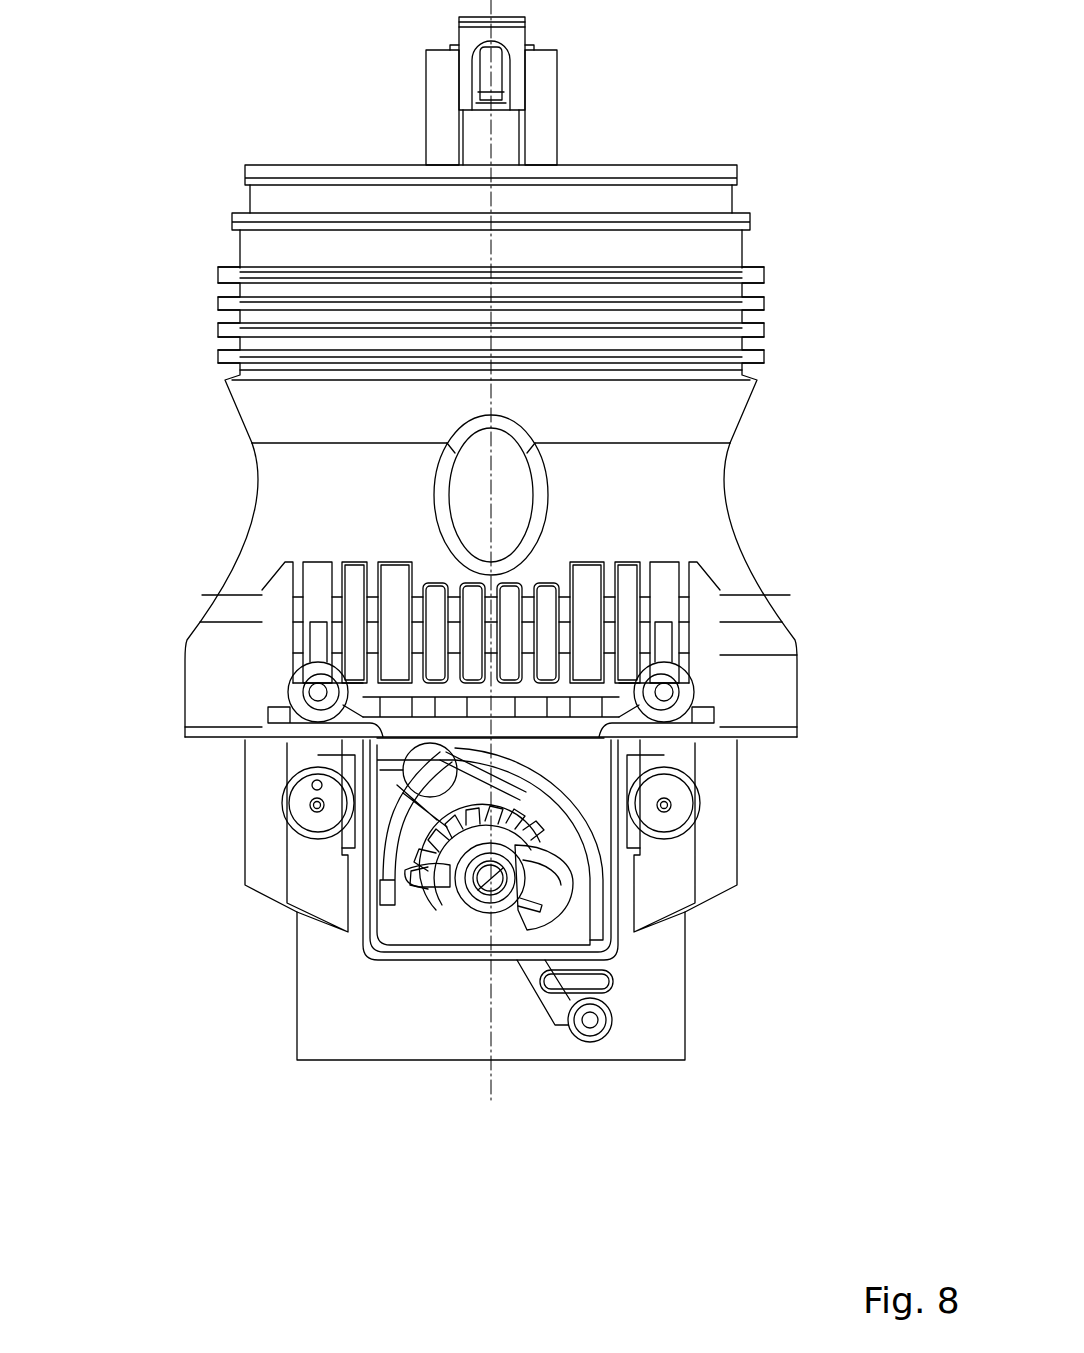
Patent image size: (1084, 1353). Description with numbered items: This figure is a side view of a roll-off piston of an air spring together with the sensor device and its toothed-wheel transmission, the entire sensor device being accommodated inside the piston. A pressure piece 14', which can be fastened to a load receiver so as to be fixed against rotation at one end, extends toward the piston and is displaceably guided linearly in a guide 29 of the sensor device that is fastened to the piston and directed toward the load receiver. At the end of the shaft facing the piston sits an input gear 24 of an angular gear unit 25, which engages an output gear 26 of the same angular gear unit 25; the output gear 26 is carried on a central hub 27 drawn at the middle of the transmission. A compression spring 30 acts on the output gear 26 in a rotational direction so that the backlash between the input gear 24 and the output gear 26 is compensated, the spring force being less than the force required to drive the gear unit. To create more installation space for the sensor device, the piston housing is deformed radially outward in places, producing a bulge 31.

The guide 29 is at (540, 75).
The pressure piece 14' is at (708, 91).
The bulge 31 is at (510, 505).
The input gear 24 is at (385, 825).
The output gear 26 is at (415, 875).
The angular gear unit 25 is at (433, 902).
The shaft hub 27 is at (480, 895).
The compression spring 30 is at (565, 892).